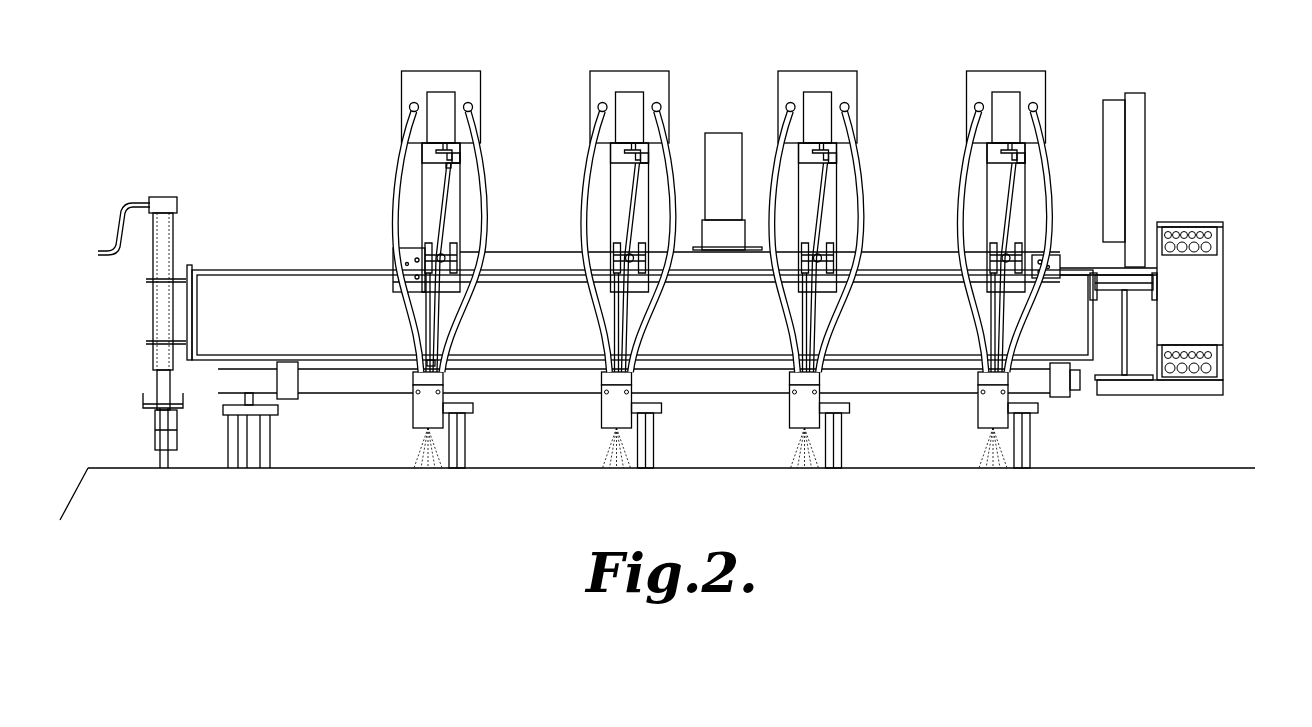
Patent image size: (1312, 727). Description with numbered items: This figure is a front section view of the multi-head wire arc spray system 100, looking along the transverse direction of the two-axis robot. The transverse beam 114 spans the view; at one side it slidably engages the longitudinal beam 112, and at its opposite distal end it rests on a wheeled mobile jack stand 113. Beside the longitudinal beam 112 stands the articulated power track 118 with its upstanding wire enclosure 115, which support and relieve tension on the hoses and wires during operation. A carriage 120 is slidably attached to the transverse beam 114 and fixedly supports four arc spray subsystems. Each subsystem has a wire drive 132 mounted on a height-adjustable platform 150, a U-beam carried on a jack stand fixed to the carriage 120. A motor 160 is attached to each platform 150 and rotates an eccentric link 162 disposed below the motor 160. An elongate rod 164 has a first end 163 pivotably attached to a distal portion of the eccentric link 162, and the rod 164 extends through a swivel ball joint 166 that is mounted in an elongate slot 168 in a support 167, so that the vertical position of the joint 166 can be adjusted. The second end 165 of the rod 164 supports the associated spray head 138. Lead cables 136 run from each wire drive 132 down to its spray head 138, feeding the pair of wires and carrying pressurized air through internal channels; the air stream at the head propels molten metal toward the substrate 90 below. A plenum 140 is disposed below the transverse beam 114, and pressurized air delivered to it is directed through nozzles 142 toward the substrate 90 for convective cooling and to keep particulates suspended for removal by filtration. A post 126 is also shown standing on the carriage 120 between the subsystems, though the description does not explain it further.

The substrate 90 is at (128, 463).
The multi-head wire arc spray system 100 is at (1088, 90).
The longitudinal beam 112 is at (1128, 352).
The mobile jack stand 113 is at (162, 193).
The transverse beam 114 is at (222, 327).
The upstanding wire enclosure 115 is at (1140, 122).
The articulated power track 118 is at (1223, 260).
The carriage 120 is at (527, 253).
The post 126 is at (722, 137).
The wire drive 132 is at (397, 85).
The lead cables 136 is at (413, 130).
The spray head 138 is at (413, 410).
The plenum 140 is at (935, 388).
The nozzles 142 is at (473, 407).
The height-adjustable platform 150 is at (466, 158).
The motor 160 is at (441, 97).
The eccentric link 162 is at (447, 155).
The first end 163 is at (446, 173).
The rod 164 is at (444, 202).
The second end 165 is at (430, 363).
The swivel ball joint 166 is at (441, 258).
The support 167 is at (428, 225).
The elongate slot 168 is at (400, 284).